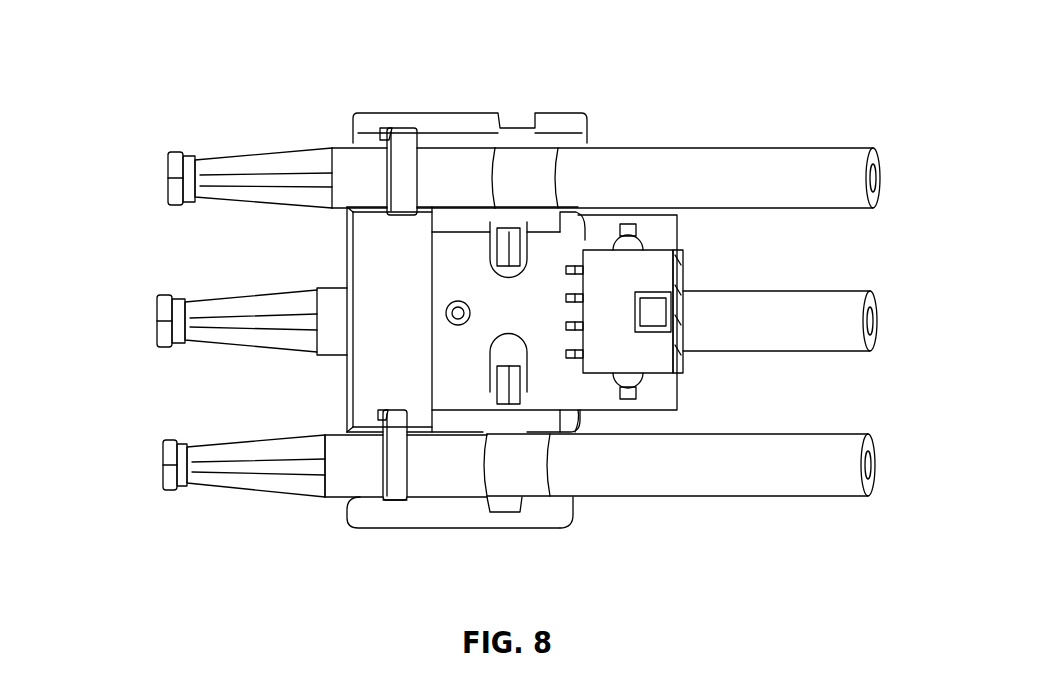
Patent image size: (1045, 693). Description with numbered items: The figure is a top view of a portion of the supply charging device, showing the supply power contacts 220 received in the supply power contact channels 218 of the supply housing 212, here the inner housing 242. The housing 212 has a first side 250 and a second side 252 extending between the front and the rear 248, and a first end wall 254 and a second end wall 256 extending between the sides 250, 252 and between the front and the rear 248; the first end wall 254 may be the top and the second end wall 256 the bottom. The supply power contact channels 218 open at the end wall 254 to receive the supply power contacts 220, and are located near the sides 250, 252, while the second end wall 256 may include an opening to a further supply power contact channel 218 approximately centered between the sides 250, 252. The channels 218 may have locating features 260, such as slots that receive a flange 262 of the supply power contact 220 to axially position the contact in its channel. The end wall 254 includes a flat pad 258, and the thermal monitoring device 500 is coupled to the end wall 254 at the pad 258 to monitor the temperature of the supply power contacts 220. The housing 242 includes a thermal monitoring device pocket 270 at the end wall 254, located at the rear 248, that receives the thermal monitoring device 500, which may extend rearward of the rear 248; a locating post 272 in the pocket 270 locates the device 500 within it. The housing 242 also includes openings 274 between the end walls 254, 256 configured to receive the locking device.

The supply housing 212 is at (310, 388).
The supply power contact channel 218 is at (562, 141).
The supply power contact 220 is at (462, 167).
The inner housing 242 is at (367, 237).
The rear 248 is at (577, 518).
The first side 250 is at (405, 530).
The second side 252 is at (432, 113).
The first end wall 254 is at (372, 357).
The second end wall 256 is at (586, 432).
The flat pad 258 is at (385, 282).
The locating feature 260 is at (384, 504).
The flange 262 is at (390, 450).
The thermal monitoring device pocket 270 is at (556, 228).
The locating post 272 is at (449, 318).
The opening 274 is at (508, 214).
The thermal monitoring device 500 is at (686, 254).